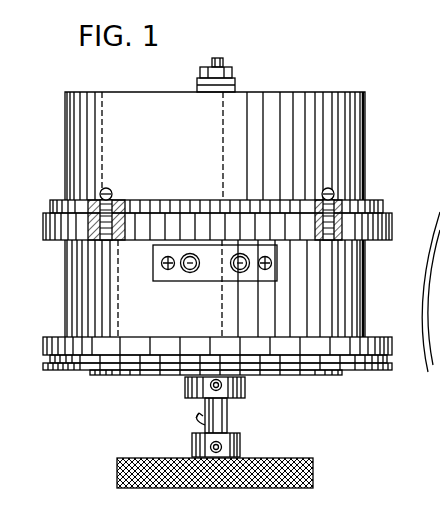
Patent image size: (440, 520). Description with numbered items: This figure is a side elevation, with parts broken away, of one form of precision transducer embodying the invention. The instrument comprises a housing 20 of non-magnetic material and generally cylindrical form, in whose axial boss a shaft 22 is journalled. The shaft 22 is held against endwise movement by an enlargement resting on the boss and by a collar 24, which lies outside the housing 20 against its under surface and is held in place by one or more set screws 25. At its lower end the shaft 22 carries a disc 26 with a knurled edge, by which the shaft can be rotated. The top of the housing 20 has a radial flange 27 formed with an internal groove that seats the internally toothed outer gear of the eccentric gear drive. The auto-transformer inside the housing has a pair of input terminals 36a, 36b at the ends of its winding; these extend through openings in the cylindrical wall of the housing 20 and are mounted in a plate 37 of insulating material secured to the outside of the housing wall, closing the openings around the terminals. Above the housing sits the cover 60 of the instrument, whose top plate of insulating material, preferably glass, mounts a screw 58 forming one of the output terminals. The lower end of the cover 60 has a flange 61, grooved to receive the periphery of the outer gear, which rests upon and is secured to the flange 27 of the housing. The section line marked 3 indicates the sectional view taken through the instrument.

The housing 20 is at (90, 294).
The shaft 22 is at (227, 414).
The collar 24 is at (243, 390).
The set screws 25 is at (211, 391).
The disc 26 is at (159, 460).
The radial flange 27 is at (45, 231).
The input terminal 36a is at (190, 273).
The input terminal 36b is at (239, 274).
The plate 37 is at (162, 271).
The screw 58 is at (219, 58).
The cover 60 is at (345, 139).
The flange 61 is at (52, 206).
The section line 3- 3 is at (439, 303).